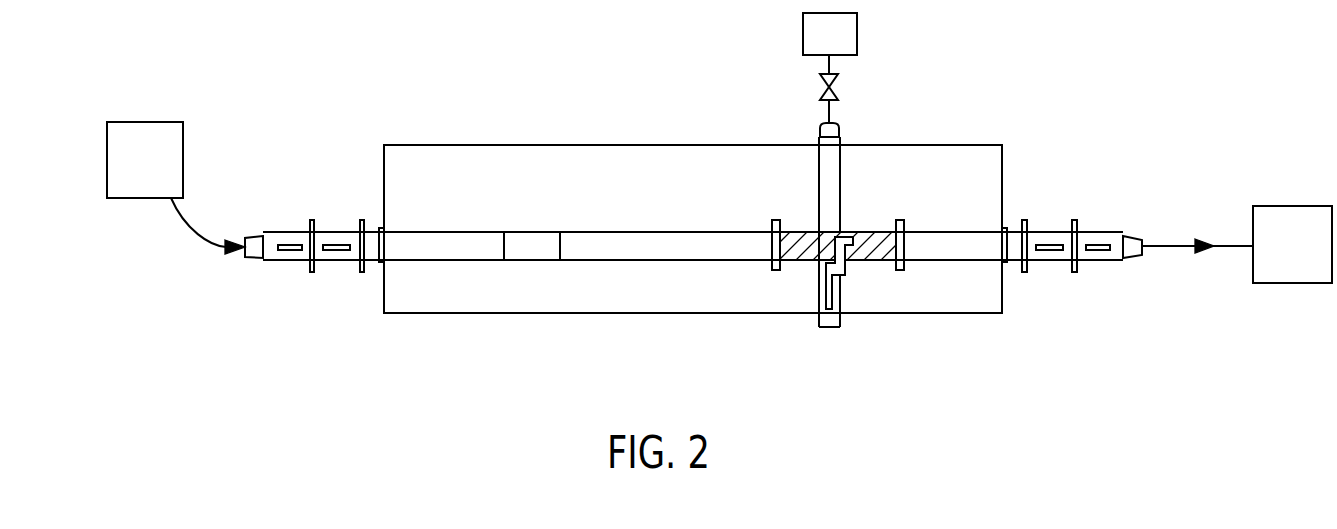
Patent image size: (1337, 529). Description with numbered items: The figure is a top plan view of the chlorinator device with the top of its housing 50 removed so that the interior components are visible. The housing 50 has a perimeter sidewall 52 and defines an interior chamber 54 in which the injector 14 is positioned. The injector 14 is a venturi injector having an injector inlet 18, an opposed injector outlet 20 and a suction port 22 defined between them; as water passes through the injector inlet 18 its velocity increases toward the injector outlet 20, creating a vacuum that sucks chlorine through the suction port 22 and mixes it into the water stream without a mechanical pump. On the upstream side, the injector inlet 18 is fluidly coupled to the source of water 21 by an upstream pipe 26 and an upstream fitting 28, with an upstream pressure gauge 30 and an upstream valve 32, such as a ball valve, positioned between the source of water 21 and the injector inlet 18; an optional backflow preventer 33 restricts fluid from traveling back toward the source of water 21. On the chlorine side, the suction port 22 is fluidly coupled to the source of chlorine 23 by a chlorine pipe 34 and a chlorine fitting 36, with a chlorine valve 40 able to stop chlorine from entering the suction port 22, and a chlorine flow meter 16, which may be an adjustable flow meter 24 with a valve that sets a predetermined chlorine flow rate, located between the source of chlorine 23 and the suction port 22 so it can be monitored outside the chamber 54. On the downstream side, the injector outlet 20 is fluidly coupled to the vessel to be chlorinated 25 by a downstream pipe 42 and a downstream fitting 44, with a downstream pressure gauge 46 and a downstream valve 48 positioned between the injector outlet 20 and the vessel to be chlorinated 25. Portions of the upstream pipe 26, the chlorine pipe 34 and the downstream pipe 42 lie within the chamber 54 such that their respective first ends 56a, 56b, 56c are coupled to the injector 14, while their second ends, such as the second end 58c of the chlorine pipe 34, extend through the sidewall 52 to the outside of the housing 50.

The injector 14 is at (802, 230).
The chlorine flow meter 16 is at (828, 327).
The injector inlet 18 is at (777, 270).
The injector outlet 20 is at (898, 270).
The source of water 21 is at (176, 188).
The suction port 22 is at (863, 232).
The source of chlorine 23 is at (830, 43).
The adjustable flow meter 24 is at (839, 273).
The vessel to be chlorinated 25 is at (1237, 244).
The upstream pipe 26 is at (450, 243).
The upstream fitting 28 is at (254, 257).
The upstream pressure gauge 30 is at (288, 242).
The upstream valve 32 is at (345, 262).
The backflow preventer 33 is at (534, 256).
The chlorine pipe 34 is at (838, 180).
The chlorine fitting 36 is at (838, 127).
The chlorine valve 40 is at (840, 88).
The downstream pipe 42 is at (983, 238).
The downstream fitting 44 is at (1130, 238).
The downstream pressure gauge 46 is at (1095, 252).
The downstream valve 48 is at (1044, 232).
The housing 50 is at (533, 145).
The perimeter sidewall 52 is at (497, 313).
The interior chamber 54 is at (637, 193).
The first end of upstream pipe 56a is at (757, 236).
The first end of chlorine pipe 56b is at (830, 208).
The first end of downstream pipe 56c is at (922, 245).
The second end of chlorine pipe 58c is at (820, 138).